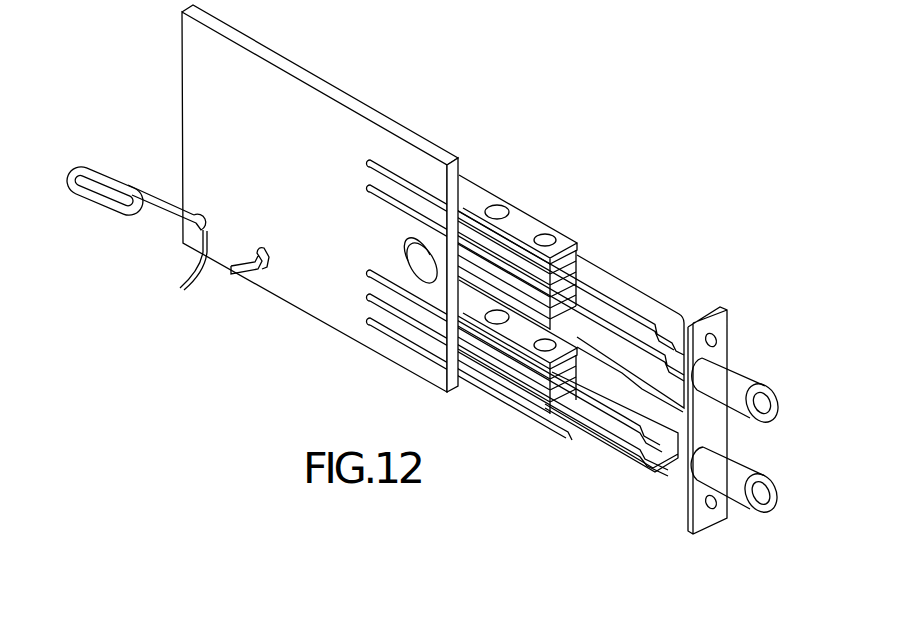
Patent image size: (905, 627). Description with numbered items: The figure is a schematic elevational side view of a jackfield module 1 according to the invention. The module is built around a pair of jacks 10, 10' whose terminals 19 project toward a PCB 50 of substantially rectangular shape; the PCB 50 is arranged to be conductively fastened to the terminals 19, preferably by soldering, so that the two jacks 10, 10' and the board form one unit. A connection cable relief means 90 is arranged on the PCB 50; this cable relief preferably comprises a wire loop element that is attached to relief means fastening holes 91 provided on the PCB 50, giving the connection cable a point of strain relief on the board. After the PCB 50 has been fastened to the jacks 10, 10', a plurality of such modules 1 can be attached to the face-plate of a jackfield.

The jackfield module 1 is at (549, 168).
The jack 10 is at (571, 293).
The jack 10' is at (568, 385).
The terminals 19 is at (465, 177).
The PCB 50 is at (278, 88).
The connection cable relief means 90 is at (102, 204).
The relief means fastening holes 91 is at (252, 250).